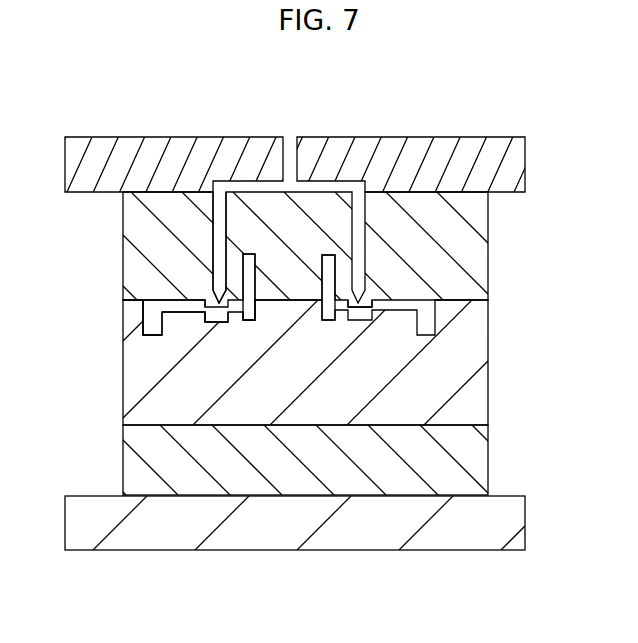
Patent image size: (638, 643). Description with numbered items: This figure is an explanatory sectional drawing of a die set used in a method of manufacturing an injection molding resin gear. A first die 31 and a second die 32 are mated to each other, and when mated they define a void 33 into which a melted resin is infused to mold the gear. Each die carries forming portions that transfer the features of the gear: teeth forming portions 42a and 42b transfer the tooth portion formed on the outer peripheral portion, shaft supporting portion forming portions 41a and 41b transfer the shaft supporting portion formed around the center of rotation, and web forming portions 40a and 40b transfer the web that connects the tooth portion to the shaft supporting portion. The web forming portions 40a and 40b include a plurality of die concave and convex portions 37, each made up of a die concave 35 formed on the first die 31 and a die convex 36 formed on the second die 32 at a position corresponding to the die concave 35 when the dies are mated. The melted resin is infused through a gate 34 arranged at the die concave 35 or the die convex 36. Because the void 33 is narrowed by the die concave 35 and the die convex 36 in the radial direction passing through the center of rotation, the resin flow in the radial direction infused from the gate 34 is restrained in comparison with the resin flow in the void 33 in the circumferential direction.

The first die 31 is at (468, 238).
The second die 32 is at (462, 403).
The void 33 is at (430, 327).
The gate 34 is at (368, 304).
The die concave 35 is at (217, 302).
The die convex 36 is at (220, 313).
The die concave and convex portions 37 is at (150, 318).
The web forming portion 40a is at (175, 305).
The web forming portion 40b is at (189, 304).
The shaft supporting portion forming portion 41a is at (250, 258).
The shaft supporting portion forming portion 41b is at (248, 313).
The teeth forming portion 42a is at (147, 296).
The teeth forming portion 42b is at (148, 340).